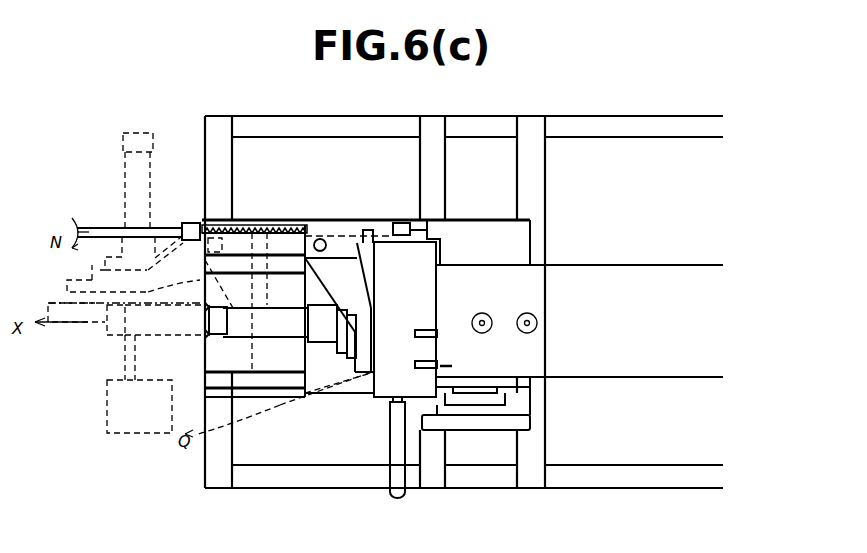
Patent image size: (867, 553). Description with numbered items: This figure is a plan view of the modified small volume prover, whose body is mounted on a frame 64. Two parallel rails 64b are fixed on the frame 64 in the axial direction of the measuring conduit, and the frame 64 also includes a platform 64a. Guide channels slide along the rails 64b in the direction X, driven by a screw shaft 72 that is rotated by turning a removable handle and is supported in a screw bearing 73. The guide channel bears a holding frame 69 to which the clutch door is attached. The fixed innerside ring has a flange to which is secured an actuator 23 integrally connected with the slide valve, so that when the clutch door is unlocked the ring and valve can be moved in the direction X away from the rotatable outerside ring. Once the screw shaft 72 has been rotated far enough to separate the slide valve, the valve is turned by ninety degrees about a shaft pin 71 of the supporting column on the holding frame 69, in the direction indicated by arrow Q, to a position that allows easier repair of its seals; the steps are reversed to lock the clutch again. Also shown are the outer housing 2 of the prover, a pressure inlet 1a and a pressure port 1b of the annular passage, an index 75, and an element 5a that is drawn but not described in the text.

The pressure inlet 1a is at (482, 312).
The pressure port of an annular passage 1b is at (527, 312).
The outer housing 2 is at (653, 275).
The base plate 5a is at (525, 423).
The actuator 23 is at (135, 176).
The frame 64 is at (531, 180).
The platform 64a is at (510, 238).
The rails 64b is at (282, 262).
The holding frame 69 is at (346, 256).
The shaft pin 71 is at (319, 238).
The screw shaft 72 is at (258, 226).
The screw bearing 73 is at (192, 223).
The index 75 is at (455, 332).